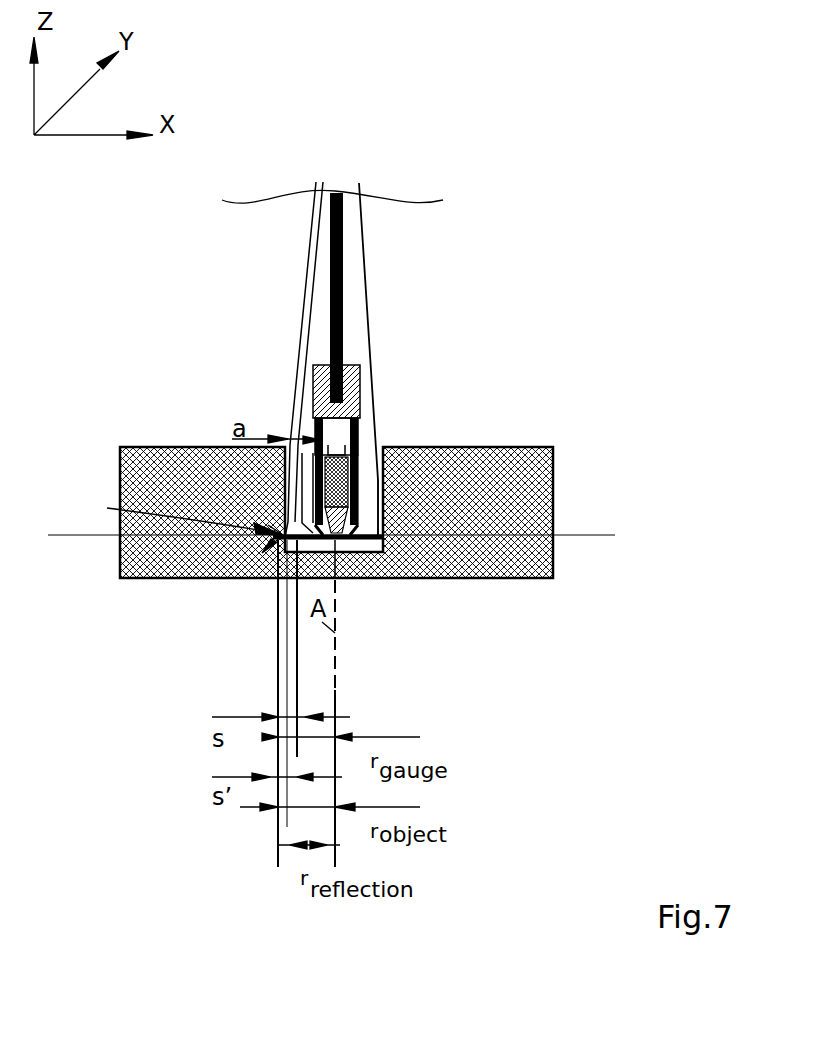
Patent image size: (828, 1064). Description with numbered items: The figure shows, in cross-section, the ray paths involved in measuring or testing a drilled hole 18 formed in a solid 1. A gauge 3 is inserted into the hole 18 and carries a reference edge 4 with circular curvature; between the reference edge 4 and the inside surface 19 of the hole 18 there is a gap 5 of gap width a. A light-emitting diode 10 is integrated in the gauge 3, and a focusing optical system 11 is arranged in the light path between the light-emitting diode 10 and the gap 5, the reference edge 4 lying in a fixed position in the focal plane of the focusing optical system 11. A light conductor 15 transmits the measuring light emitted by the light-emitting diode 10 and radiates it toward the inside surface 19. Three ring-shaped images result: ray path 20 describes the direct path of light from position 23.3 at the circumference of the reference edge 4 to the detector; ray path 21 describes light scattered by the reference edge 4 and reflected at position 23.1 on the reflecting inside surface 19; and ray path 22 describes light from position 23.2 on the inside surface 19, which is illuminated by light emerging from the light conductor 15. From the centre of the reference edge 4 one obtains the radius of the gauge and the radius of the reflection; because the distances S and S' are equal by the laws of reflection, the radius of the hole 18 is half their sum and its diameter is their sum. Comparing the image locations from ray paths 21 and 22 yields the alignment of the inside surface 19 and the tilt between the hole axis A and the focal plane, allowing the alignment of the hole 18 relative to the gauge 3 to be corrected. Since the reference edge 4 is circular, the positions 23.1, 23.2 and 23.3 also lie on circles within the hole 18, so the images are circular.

The solid 1 is at (140, 447).
The gauge 3 is at (317, 435).
The reference edge 4 is at (440, 447).
The gap 5 is at (273, 580).
The light-emitting diode 10 is at (353, 440).
The focusing optical system 11 is at (363, 503).
The light conductor 15 is at (472, 580).
The drilled hole 18 is at (351, 552).
The inside surface 19 is at (377, 552).
The ray path 20 is at (317, 246).
The ray path 21 is at (304, 303).
The ray path 22 is at (366, 242).
The position 23.1 is at (168, 516).
The position 23.2 is at (278, 542).
The position 23.3 is at (282, 540).